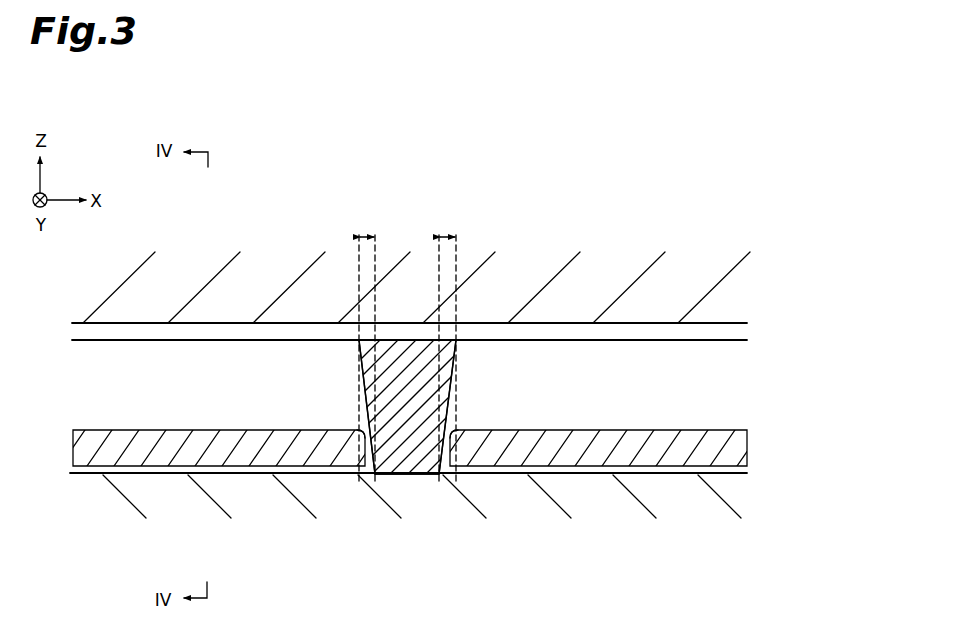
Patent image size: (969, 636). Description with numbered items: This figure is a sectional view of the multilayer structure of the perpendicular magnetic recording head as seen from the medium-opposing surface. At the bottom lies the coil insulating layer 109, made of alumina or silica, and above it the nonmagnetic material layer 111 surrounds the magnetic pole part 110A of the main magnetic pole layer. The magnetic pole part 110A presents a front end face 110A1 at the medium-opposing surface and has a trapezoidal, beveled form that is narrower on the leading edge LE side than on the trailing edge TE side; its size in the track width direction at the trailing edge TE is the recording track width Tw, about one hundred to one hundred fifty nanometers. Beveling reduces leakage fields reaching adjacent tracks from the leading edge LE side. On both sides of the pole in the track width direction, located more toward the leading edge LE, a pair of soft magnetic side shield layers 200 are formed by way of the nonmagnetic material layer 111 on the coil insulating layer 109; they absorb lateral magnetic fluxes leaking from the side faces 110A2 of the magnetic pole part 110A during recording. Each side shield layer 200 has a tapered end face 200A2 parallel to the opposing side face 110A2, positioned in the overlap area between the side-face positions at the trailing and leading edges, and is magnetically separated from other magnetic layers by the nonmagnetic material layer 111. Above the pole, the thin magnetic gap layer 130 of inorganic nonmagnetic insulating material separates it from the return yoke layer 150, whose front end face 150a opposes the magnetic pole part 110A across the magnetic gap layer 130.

The return yoke layer 150 is at (483, 287).
The front end face 150a is at (725, 273).
The magnetic gap layer 130 is at (718, 332).
The nonmagnetic material layer 111 is at (715, 370).
The coil insulating layer 109 is at (718, 495).
The side shield layer 200 is at (220, 462).
The end face 200A2 is at (363, 426).
The magnetic pole part 110A is at (406, 314).
The front end face 110A1 is at (400, 383).
The side face 110A2 is at (360, 392).
The trailing edge TE is at (396, 339).
The leading edge LE is at (412, 476).
The recording track width Tw is at (360, 294).